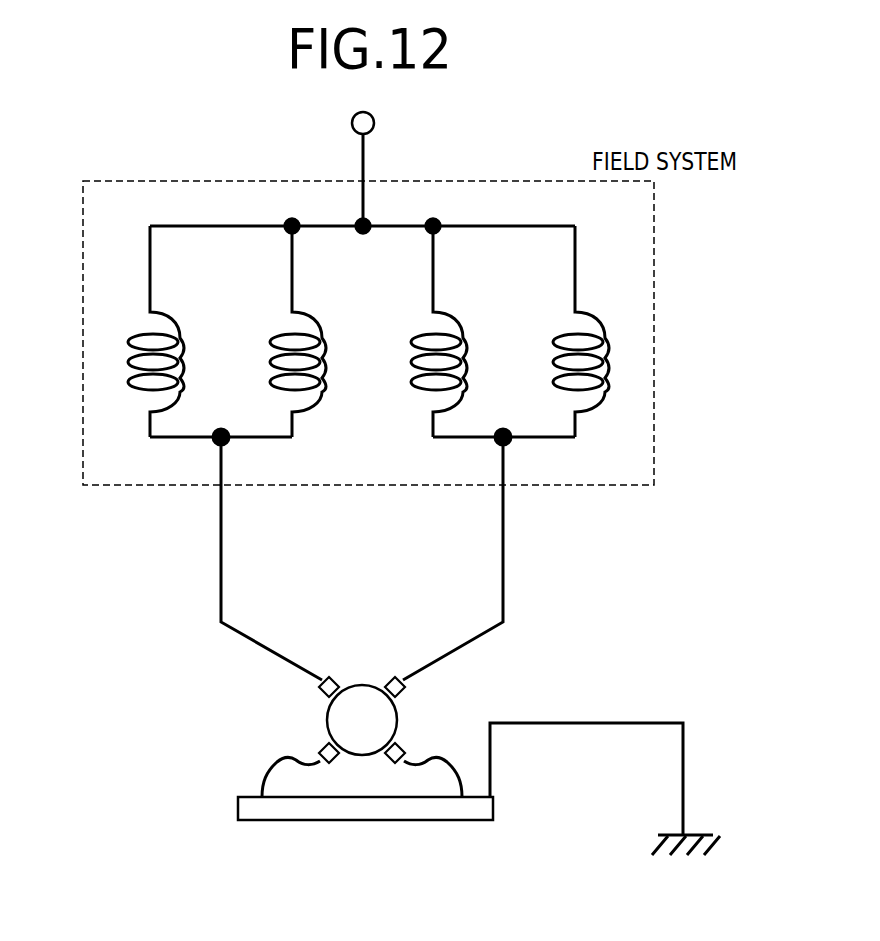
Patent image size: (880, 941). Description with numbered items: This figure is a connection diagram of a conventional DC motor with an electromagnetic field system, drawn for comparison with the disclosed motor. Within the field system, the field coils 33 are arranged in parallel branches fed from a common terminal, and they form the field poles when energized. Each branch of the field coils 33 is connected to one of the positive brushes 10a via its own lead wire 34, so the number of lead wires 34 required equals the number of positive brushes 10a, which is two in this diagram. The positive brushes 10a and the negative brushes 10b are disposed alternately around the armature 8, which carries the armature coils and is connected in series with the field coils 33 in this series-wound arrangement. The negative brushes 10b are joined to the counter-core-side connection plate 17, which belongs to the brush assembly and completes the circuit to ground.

The field coil 33 is at (603, 371).
The lead wire 34 is at (219, 533).
The armature 8 is at (357, 735).
The positive brush 10a is at (332, 676).
The negative brush 10b is at (322, 748).
The counter-core-side connection plate 17 is at (270, 810).